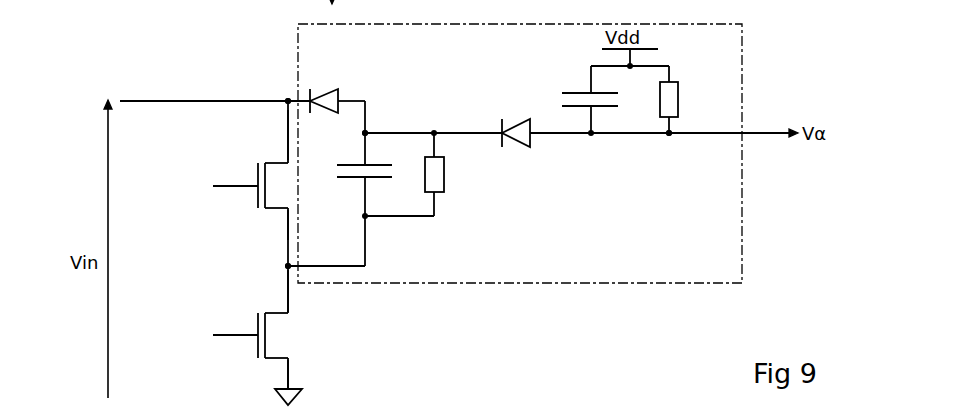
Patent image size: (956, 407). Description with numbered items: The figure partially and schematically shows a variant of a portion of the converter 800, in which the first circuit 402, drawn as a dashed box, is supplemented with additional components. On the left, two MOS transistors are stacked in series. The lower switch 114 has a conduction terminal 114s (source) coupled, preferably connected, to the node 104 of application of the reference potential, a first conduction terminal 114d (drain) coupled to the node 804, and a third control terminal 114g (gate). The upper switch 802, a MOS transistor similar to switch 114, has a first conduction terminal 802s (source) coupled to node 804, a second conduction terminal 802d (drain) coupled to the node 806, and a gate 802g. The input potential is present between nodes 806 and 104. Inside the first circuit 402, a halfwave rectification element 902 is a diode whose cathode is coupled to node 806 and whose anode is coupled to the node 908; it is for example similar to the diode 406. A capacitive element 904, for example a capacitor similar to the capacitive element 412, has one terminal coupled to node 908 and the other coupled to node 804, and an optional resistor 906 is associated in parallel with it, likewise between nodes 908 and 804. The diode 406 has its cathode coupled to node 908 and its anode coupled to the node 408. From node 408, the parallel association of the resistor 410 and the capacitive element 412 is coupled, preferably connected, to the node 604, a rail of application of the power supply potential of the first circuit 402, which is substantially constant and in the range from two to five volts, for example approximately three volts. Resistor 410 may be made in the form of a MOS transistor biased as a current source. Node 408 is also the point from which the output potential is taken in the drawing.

The converter 800 is at (777, 58).
The first circuit 402 is at (742, 247).
The switch 802 is at (246, 162).
The control terminal 802g is at (222, 187).
The second conduction terminal 802d is at (287, 135).
The first conduction terminal 802s is at (288, 226).
The node 806 is at (286, 100).
The node 804 is at (288, 266).
The switch 114 is at (290, 330).
The first conduction terminal 114d is at (288, 296).
The third control terminal 114g is at (233, 342).
The conduction terminal 114s is at (280, 372).
The node of application of the reference potential 104 is at (300, 393).
The halfwave rectification element 902 is at (320, 93).
The node 908 is at (366, 132).
The capacitive element 904 is at (353, 190).
The resistor 906 is at (444, 192).
The diode 406 is at (516, 142).
The capacitive element 412 is at (580, 85).
The resistor 410 is at (672, 82).
The node of application of a power supply potential 604 is at (655, 52).
The node 408 is at (669, 134).